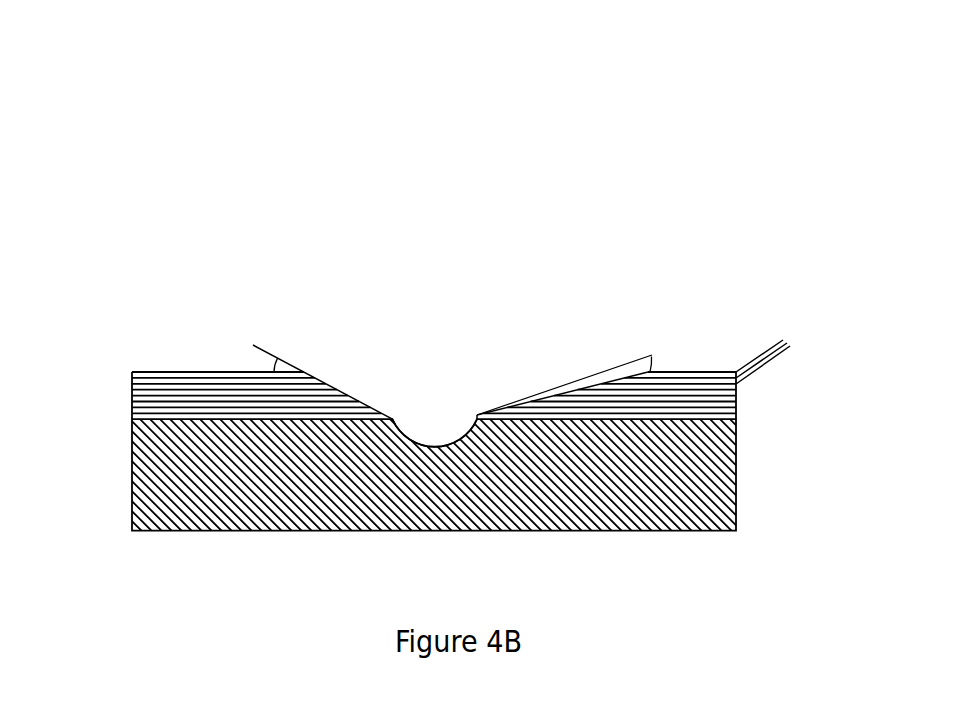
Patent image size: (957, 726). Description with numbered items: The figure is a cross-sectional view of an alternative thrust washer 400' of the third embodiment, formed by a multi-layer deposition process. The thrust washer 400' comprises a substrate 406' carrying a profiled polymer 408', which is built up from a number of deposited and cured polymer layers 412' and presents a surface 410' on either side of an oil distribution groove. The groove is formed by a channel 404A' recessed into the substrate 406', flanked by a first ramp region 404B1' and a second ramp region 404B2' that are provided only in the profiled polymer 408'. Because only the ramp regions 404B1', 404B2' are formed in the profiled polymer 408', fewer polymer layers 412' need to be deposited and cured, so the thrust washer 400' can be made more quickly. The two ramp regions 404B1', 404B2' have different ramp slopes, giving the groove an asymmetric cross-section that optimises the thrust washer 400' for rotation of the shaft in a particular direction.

The thrust washer 400' is at (197, 90).
The channel 404A' is at (422, 311).
The first ramp region 404B1' is at (322, 331).
The second ramp region 404B2' is at (562, 330).
The substrate 406' is at (431, 519).
The profiled polymer layer 408' is at (385, 395).
The thrust washer surface 410' is at (438, 297).
The polymer layers 412' is at (788, 346).